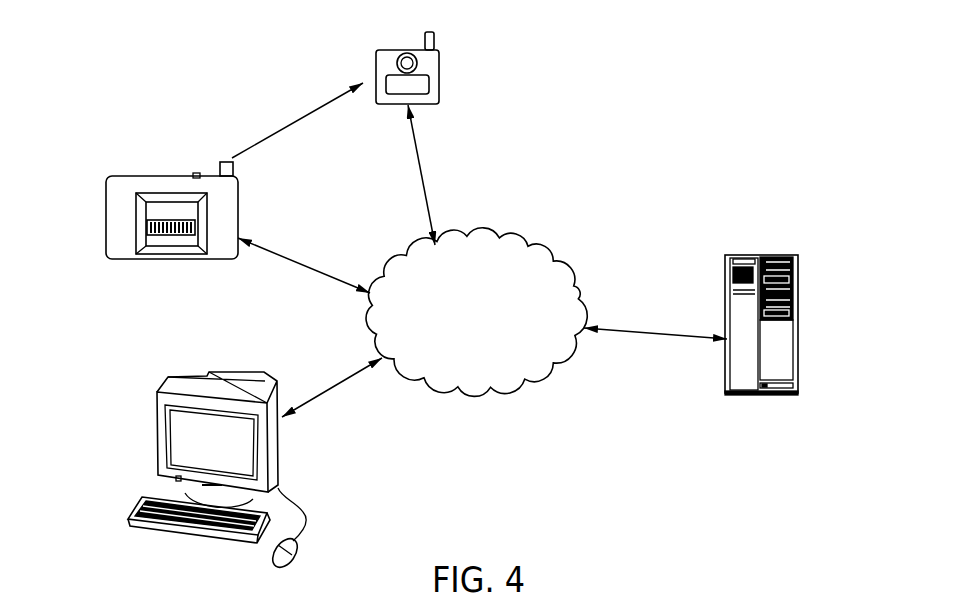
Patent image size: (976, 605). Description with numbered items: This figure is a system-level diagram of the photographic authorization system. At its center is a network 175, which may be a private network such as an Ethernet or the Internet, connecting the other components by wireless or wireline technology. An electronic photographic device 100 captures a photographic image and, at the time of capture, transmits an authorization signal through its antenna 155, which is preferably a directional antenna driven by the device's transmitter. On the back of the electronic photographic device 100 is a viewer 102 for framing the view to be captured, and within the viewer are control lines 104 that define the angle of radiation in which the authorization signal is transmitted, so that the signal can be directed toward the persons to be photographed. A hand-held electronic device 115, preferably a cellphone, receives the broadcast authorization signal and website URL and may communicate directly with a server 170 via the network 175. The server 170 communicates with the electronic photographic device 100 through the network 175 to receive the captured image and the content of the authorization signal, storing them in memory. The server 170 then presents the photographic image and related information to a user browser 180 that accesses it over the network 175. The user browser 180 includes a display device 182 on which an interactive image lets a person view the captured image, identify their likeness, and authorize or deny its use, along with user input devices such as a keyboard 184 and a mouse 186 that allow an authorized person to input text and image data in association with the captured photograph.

The electronic photographic device 100 is at (142, 212).
The viewer 102 is at (134, 213).
The control lines 104 is at (149, 228).
The hand-held electronic device 115 is at (432, 68).
The antenna 155 is at (220, 163).
The server 170 is at (800, 340).
The network 175 is at (483, 388).
The user browser 180 is at (190, 472).
The display device 182 is at (245, 448).
The keyboard 184 is at (157, 532).
The mouse 186 is at (300, 548).